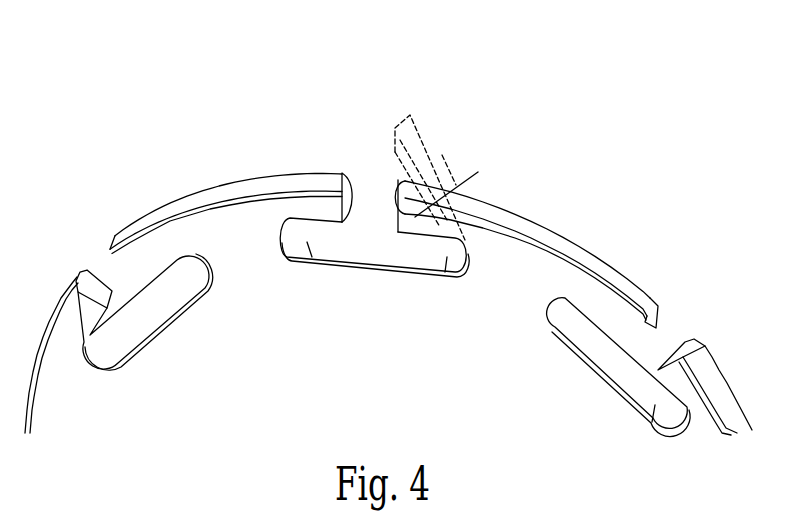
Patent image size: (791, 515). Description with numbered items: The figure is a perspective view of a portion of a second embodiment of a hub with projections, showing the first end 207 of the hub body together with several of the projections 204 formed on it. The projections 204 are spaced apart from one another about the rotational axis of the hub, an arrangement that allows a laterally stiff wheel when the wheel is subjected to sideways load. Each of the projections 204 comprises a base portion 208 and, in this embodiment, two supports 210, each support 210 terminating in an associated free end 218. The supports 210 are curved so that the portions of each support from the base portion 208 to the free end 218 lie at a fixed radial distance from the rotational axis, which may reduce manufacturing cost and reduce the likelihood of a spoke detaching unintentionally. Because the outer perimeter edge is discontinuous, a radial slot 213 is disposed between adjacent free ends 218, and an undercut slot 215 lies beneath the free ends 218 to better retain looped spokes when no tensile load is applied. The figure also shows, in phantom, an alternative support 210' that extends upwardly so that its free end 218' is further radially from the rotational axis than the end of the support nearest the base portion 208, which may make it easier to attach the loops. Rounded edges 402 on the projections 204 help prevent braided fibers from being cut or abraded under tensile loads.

The projections 204 is at (578, 220).
The first end 207 is at (190, 165).
The base portion 208 is at (505, 300).
The support 210 is at (458, 161).
The support 210' is at (462, 98).
The radial slot 213 is at (343, 177).
The undercut slot 215 is at (400, 270).
The free end 218 is at (373, 165).
The free end 218' is at (411, 129).
The rounded edges 402 is at (93, 293).